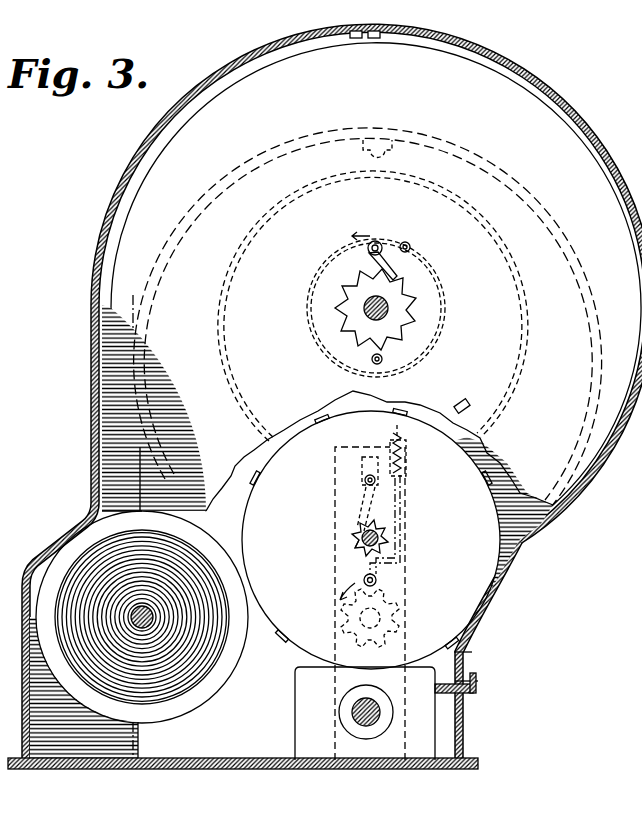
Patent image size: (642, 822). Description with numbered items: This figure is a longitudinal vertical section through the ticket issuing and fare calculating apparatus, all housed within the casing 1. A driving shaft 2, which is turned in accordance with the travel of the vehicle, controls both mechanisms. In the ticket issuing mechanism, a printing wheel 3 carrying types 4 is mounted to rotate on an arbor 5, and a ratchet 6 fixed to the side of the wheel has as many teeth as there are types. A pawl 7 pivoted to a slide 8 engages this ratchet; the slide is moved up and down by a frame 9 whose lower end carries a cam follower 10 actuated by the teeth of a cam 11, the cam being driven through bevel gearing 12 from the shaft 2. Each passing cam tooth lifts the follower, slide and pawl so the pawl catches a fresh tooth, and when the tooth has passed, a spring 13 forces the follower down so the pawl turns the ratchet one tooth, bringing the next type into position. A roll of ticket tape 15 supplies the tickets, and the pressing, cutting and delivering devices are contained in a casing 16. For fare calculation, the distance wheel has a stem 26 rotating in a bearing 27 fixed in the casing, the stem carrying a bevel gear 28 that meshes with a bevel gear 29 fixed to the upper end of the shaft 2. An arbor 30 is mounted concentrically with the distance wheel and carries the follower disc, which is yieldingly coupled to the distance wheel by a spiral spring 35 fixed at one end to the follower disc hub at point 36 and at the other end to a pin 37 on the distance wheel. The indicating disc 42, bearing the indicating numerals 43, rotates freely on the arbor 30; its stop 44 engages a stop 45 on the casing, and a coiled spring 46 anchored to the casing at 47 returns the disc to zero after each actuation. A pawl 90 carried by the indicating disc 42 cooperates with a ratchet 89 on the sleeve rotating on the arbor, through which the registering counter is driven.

The casing 1 is at (92, 466).
The driving shaft 2 is at (0, 522).
The printing wheel 3 is at (243, 512).
The types 4 is at (500, 562).
The arbor 5 is at (356, 540).
The ratchet 6 is at (19, 500).
The pawl 7 is at (358, 508).
The slide 8 is at (362, 478).
The frame 9 is at (404, 513).
The cam follower 10 is at (378, 580).
The cam 11 is at (386, 603).
The bevel gearing 12 is at (6, 578).
The spring 13 is at (405, 467).
The roll of ticket tape 15 is at (295, 680).
The casing 16 is at (306, 710).
The stem 26 is at (0, 262).
The bearing 27 is at (0, 338).
The bevel gear 28 is at (0, 287).
The bevel gear 29 is at (0, 308).
The arbor 30 is at (352, 308).
The spiral spring 35 is at (316, 342).
The point 36 is at (383, 360).
The pin 37 is at (412, 247).
The indicating disc 42 is at (366, 285).
The indicating numerals 43 is at (401, 83).
The stop 44 is at (395, 25).
The stop 45 is at (357, 30).
The coiled spring 46 is at (531, 330).
The casing fixing point 47 is at (396, 136).
The ratchet 89 is at (397, 300).
The pawl 90 is at (380, 250).